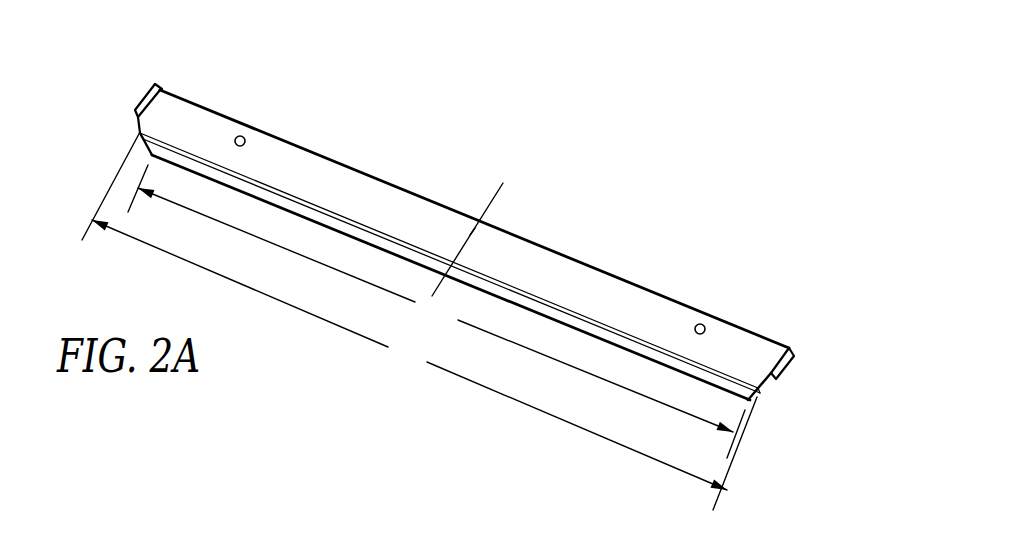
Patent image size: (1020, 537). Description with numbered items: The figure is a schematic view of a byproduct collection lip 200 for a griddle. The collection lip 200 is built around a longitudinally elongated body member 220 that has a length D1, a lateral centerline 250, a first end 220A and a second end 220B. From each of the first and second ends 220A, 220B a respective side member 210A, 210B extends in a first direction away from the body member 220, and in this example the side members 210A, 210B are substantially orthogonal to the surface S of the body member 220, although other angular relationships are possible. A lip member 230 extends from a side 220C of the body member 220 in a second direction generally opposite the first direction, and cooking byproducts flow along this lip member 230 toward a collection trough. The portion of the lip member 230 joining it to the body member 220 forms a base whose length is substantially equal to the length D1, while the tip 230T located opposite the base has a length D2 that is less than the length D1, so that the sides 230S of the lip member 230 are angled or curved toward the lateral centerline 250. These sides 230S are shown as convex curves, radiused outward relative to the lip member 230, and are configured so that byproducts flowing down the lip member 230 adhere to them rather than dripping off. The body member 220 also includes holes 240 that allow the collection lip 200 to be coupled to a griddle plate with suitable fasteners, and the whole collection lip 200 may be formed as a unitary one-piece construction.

The collection lip 200 is at (443, 263).
The side member 210A is at (145, 90).
The side member 210B is at (793, 354).
The body member 220 is at (445, 272).
The first end 220A is at (138, 132).
The second end 220B is at (775, 380).
The side of the body member 220C is at (225, 195).
The lip member 230 is at (412, 325).
The sides of the lip member 230S is at (145, 148).
The tip 230T is at (578, 335).
The holes 240 is at (240, 136).
The lateral centerline 250 is at (465, 245).
The surface S is at (423, 220).
The length D1 is at (419, 321).
The length D2 is at (436, 311).